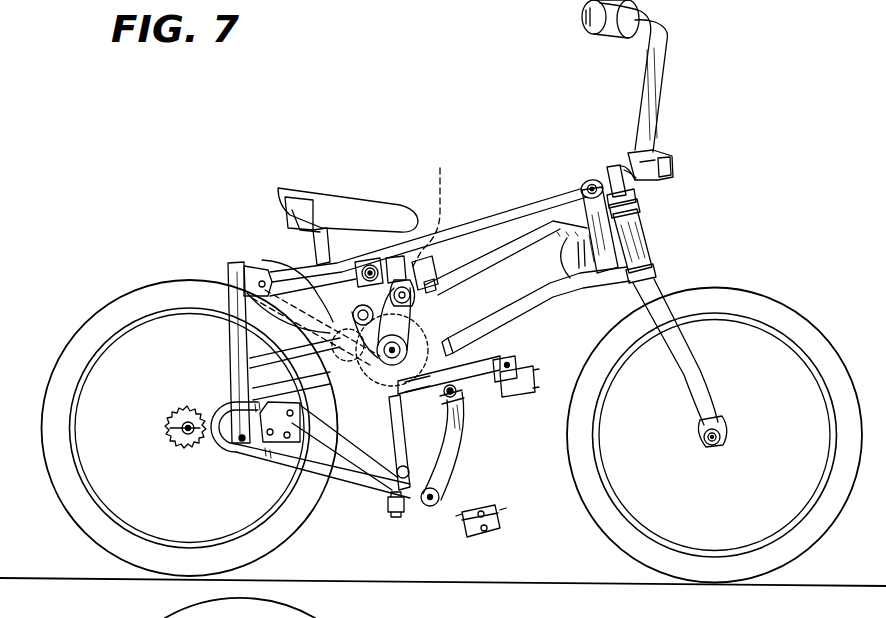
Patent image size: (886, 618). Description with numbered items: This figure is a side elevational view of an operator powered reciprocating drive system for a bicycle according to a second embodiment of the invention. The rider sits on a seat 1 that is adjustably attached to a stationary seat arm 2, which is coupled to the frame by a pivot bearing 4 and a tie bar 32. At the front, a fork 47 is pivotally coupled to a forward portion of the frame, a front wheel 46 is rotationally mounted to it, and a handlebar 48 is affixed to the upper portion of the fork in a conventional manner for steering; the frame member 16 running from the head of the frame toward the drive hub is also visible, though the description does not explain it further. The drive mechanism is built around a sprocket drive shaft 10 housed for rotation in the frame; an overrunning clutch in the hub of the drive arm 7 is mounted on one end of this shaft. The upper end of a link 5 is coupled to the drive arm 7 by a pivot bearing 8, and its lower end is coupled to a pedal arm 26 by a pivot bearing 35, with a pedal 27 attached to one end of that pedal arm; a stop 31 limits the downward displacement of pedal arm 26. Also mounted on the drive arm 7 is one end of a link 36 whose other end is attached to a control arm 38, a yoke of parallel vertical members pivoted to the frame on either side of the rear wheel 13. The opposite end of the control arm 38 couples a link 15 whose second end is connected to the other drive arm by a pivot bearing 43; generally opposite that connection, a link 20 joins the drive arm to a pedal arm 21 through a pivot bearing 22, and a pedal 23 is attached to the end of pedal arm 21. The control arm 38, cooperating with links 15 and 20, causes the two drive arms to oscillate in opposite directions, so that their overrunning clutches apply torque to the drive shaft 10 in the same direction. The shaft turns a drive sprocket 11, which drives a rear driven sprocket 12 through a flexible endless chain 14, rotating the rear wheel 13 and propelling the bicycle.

The seat 1 is at (316, 168).
The seat arm 2 is at (512, 210).
The pivot bearing 4 is at (590, 187).
The link 5 is at (472, 396).
The drive arm 7 is at (432, 316).
The pivot bearing 8 is at (440, 168).
The sprocket drive shaft 10 is at (392, 352).
The drive sprocket 11 is at (362, 398).
The rear driven sprocket 12 is at (172, 418).
The rear wheel 13 is at (95, 315).
The flexible endless chain 14 is at (214, 402).
The link 15 is at (282, 275).
The down tube 16 is at (506, 344).
The link 20 is at (460, 474).
The pedal arm 21 is at (422, 532).
The pivot bearing 22 is at (403, 514).
The pedal 23 is at (492, 535).
The pedal arm 26 is at (484, 380).
The pedal 27 is at (517, 345).
The stop 31 is at (380, 488).
The tie bar 32 is at (362, 268).
The pivot bearing 35 is at (457, 406).
The link 36 is at (297, 270).
The control arm 38 is at (227, 276).
The pivot bearing 43 is at (295, 369).
The front wheel 46 is at (735, 282).
The fork 47 is at (662, 272).
The handlebar 48 is at (662, 82).